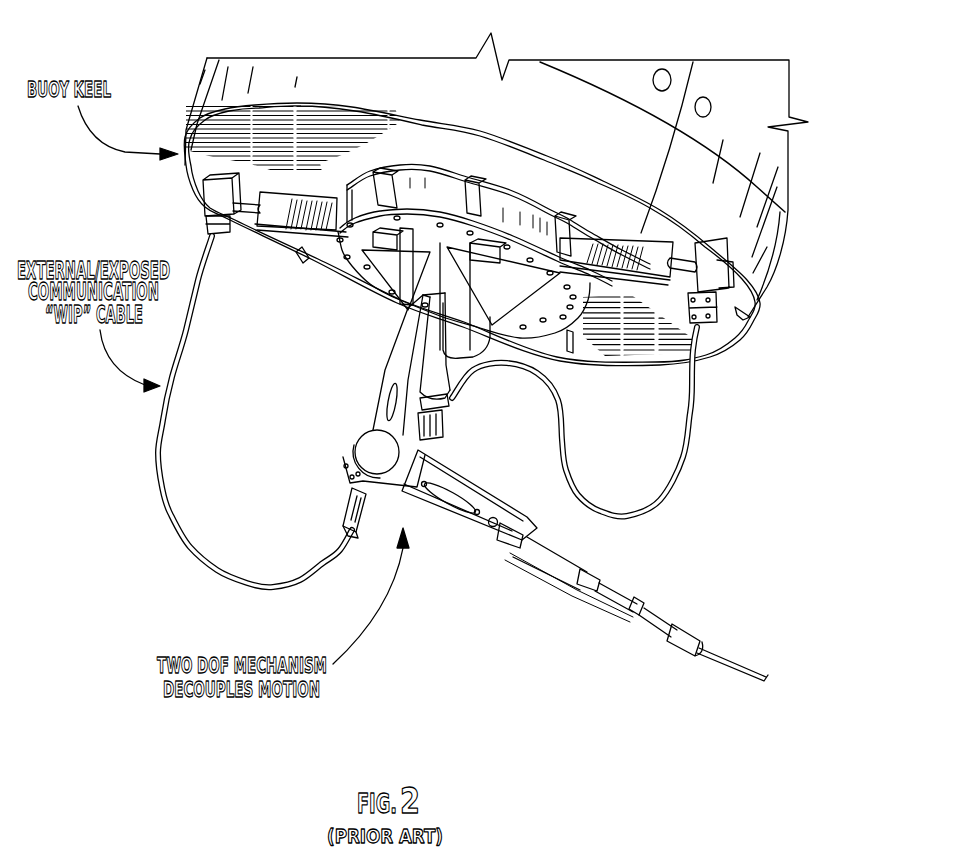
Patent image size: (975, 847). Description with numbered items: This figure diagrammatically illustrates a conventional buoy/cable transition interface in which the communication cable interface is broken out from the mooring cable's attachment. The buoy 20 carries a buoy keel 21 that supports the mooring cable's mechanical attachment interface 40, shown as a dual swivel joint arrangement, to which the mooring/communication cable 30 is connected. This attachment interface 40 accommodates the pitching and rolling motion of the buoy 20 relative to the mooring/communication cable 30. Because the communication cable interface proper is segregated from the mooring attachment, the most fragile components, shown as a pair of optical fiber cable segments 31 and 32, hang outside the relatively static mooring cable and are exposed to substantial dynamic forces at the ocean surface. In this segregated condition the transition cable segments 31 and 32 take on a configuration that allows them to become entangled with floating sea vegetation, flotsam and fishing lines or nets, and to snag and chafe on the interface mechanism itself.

The buoy 20 is at (486, 199).
The buoy keel 21 is at (707, 354).
The mooring/communication cable 30 is at (724, 646).
The optical fiber cable segment 31 is at (161, 418).
The optical fiber cable segment 32 is at (688, 468).
The mooring cable attachment interface 40 is at (454, 474).